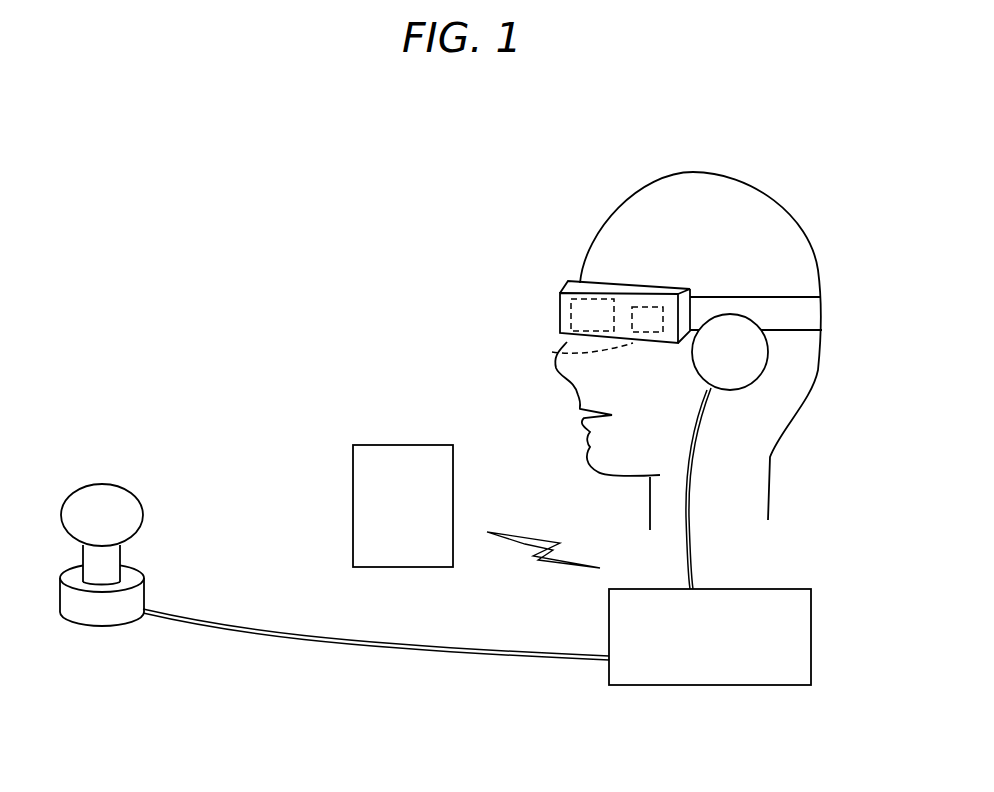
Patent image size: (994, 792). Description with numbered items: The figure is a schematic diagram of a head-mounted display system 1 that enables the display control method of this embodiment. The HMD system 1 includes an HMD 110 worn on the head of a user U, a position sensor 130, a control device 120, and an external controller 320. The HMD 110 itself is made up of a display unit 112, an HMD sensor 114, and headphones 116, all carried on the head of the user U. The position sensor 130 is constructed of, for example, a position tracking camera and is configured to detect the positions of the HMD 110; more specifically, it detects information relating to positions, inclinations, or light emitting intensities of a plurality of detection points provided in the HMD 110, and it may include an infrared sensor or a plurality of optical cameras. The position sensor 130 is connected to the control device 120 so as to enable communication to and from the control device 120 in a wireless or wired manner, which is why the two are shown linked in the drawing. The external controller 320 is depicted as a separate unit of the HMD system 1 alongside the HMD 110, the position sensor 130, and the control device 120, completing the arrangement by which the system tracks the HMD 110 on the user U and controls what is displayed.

The HMD system 1 is at (213, 252).
The user U is at (800, 208).
The HMD 110 is at (560, 293).
The display unit 112 is at (577, 313).
The HMD sensor 114 is at (640, 338).
The headphones 116 is at (745, 330).
The control device 120 is at (789, 600).
The position sensor 130 is at (97, 497).
The external controller 320 is at (402, 445).